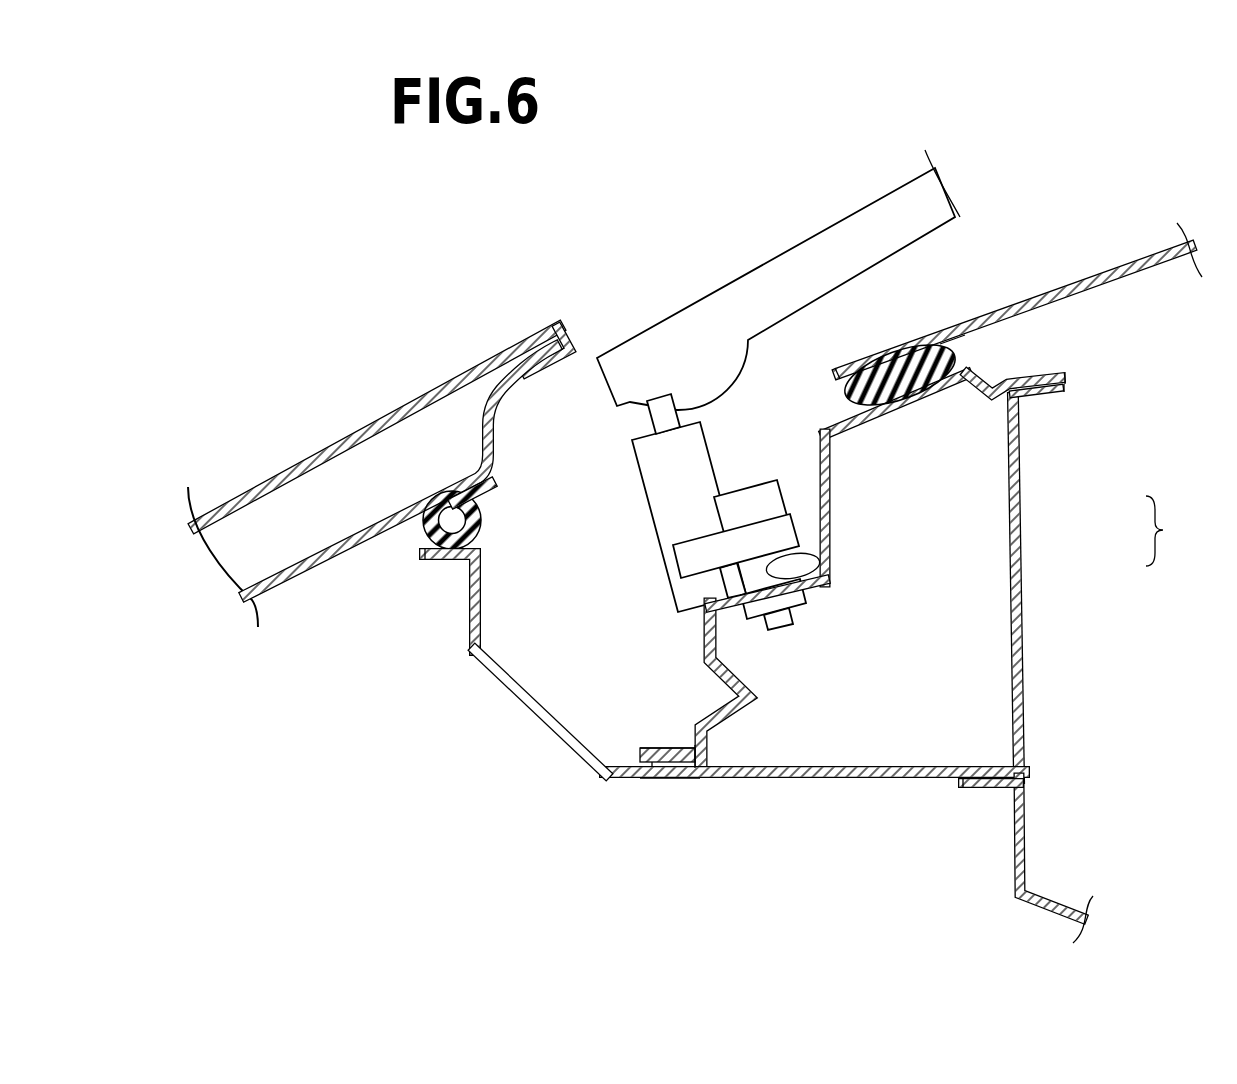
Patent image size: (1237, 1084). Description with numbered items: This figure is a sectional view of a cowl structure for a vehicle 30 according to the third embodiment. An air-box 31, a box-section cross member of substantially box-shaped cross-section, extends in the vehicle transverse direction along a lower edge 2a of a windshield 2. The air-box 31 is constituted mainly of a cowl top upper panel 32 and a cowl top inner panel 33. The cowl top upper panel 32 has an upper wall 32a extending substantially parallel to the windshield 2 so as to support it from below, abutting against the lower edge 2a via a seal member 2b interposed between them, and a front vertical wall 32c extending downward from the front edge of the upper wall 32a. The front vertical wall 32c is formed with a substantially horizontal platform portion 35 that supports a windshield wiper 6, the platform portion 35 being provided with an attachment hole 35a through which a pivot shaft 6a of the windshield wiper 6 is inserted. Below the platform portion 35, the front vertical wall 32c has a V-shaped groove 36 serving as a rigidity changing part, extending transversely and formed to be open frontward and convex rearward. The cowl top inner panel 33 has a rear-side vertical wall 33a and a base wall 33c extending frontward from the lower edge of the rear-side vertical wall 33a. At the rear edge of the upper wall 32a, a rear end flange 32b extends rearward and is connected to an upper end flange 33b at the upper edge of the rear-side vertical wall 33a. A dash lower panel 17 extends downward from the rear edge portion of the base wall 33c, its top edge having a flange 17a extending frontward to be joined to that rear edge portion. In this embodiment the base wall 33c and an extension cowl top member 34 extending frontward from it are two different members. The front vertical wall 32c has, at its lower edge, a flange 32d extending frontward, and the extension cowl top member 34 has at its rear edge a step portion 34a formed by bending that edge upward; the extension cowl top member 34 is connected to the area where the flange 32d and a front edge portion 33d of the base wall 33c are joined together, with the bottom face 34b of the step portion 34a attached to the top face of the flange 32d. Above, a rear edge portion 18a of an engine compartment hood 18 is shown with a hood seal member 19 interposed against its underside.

The windshield 2 is at (1011, 260).
The lower edge of windshield 2a is at (838, 376).
The seal member 2b is at (952, 347).
The windshield wiper 6 is at (778, 348).
The pivot shaft 6a is at (743, 490).
The dash lower panel 17 is at (1053, 860).
The flange 17a is at (983, 790).
The engine compartment hood 18 is at (389, 469).
The rear edge portion of engine compartment hood 18a is at (500, 466).
The hood seal member 19 is at (483, 531).
The vehicle 30 is at (769, 629).
The air-box 31 is at (898, 629).
The cowl top upper panel 32 is at (887, 609).
The upper wall 32a is at (907, 405).
The rear end flange 32b is at (1051, 376).
The front vertical wall 32c is at (828, 560).
The flange 32d is at (668, 760).
The cowl top inner panel 33 is at (890, 656).
The rear-side vertical wall 33a is at (1025, 653).
The upper end flange 33b is at (1049, 396).
The base wall 33c is at (843, 785).
The front edge portion of base wall 33d is at (685, 775).
The extension cowl top member 34 is at (593, 718).
The step portion 34a is at (677, 757).
The bottom face of step portion 34b is at (697, 775).
The platform portion 35 is at (775, 562).
The attachment hole 35a is at (780, 585).
The V-shaped groove 36 is at (722, 680).